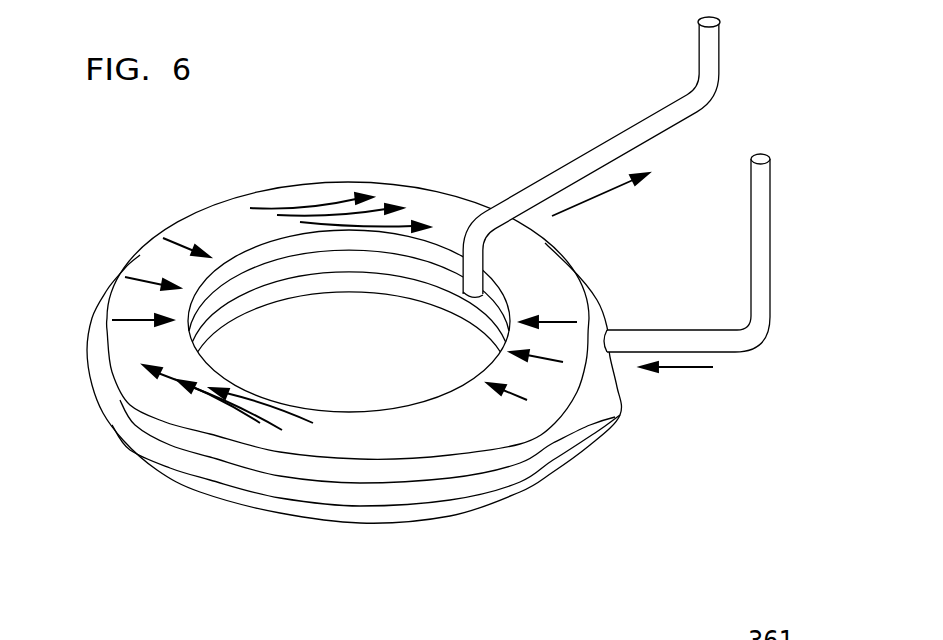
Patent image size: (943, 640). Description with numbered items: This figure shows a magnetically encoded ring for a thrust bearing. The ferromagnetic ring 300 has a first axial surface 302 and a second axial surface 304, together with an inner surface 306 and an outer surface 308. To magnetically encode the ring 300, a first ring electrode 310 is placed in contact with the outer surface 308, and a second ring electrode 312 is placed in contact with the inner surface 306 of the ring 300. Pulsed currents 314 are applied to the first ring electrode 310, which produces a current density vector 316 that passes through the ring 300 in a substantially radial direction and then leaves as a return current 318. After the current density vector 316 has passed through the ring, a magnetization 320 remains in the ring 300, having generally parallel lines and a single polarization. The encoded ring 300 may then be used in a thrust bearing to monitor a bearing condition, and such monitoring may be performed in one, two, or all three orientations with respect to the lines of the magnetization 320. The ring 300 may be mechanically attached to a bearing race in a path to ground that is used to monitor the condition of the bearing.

The ferromagnetic ring 300 is at (496, 111).
The first axial surface 302 is at (213, 223).
The second axial surface 304 is at (251, 508).
The inner surface 306 is at (440, 298).
The outer surface 308 is at (387, 518).
The first ring electrode 310 is at (472, 480).
The second ring electrode 312 is at (258, 284).
The pulsed currents 314 is at (697, 368).
The current density vector 316 is at (130, 320).
The return current 318 is at (583, 208).
The magnetization 320 is at (307, 210).